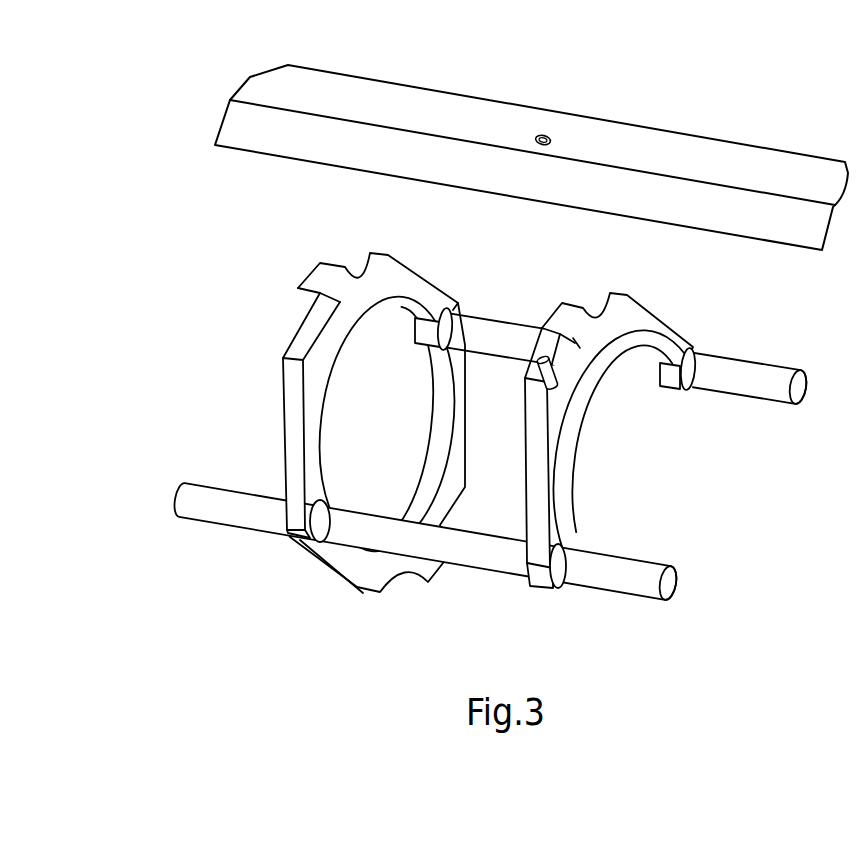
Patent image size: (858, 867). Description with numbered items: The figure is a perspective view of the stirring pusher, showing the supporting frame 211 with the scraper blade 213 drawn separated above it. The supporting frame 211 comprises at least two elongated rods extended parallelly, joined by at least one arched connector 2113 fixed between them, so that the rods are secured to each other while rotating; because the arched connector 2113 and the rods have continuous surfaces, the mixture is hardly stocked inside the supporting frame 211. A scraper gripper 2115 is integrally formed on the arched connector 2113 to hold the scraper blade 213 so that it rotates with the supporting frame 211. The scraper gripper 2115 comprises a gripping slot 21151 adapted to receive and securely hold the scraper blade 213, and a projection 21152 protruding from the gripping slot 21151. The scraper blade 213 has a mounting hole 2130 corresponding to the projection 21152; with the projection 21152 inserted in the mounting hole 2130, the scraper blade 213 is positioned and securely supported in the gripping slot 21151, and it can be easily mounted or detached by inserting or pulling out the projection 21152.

The supporting frame 211 is at (464, 430).
The scraper blade 213 is at (747, 165).
The mounting hole 2130 is at (548, 135).
The arched connector 2113 is at (318, 412).
The scraper gripper 2115 is at (658, 415).
The gripping slot 21151 is at (577, 342).
The projection 21152 is at (553, 388).